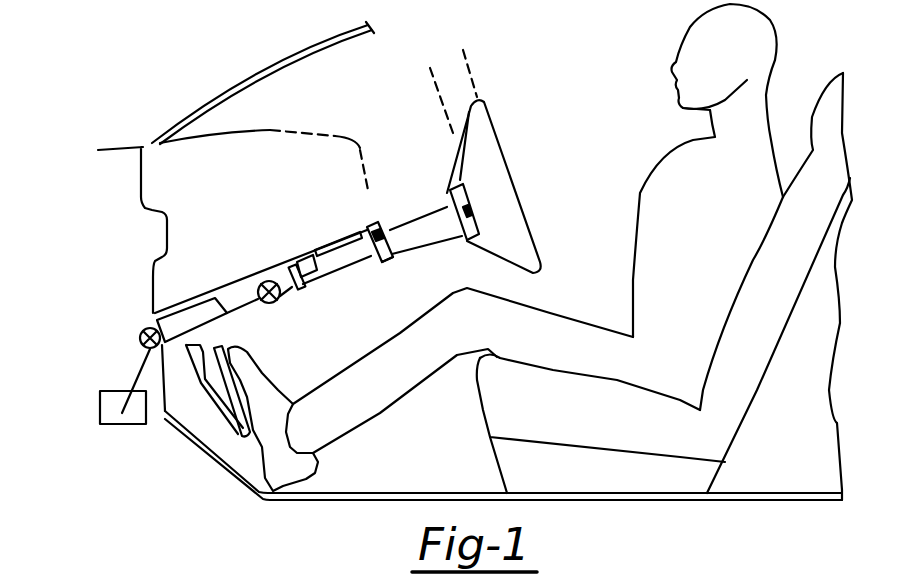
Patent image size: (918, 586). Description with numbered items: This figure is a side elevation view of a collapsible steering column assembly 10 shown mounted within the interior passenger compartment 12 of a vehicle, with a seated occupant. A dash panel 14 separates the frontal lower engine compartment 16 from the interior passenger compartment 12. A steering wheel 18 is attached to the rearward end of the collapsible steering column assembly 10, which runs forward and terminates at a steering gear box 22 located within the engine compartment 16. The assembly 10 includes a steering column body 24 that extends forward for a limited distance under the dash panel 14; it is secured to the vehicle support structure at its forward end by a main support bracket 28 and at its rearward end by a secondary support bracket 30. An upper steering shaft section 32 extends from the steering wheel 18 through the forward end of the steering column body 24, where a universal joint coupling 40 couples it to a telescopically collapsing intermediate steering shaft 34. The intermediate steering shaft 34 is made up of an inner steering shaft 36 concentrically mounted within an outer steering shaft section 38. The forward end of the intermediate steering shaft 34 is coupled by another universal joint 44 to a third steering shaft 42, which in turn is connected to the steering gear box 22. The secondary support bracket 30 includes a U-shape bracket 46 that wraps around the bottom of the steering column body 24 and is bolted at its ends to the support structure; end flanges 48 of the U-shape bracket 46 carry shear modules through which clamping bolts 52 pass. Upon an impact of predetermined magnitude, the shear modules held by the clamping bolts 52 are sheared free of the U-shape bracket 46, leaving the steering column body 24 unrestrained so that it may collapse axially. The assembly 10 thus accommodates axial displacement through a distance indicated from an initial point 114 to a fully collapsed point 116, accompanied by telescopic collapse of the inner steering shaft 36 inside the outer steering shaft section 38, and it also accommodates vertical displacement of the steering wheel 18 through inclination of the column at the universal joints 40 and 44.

The collapsible steering column assembly 10 is at (352, 275).
The interior passenger compartment 12 is at (606, 122).
The dash panel 14 is at (340, 137).
The frontal lower engine compartment 16 is at (142, 248).
The steering wheel 18 is at (543, 250).
The steering gear box 22 is at (122, 423).
The steering column body 24 is at (440, 208).
The main support bracket 28 is at (281, 266).
The secondary support bracket 30 is at (418, 256).
The upper steering shaft section 32 is at (321, 282).
The intermediate steering shaft 34 is at (203, 300).
The inner steering shaft 36 is at (260, 304).
The outer steering shaft section 38 is at (210, 318).
The universal joint coupling 40 is at (288, 292).
The third steering shaft 42 is at (146, 357).
The universal joint 44 is at (148, 328).
The U-shape bracket 46 is at (384, 262).
The end flanges 48 is at (374, 229).
The clamping bolts 52 is at (386, 226).
The initial point 114 is at (474, 88).
The fully collapsed point 116 is at (432, 68).